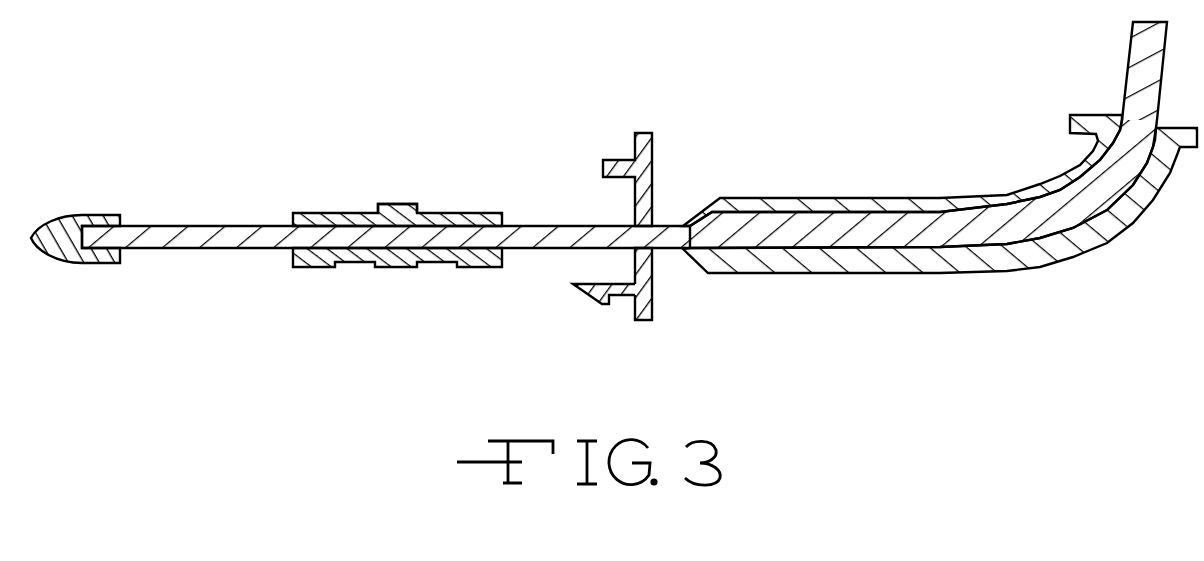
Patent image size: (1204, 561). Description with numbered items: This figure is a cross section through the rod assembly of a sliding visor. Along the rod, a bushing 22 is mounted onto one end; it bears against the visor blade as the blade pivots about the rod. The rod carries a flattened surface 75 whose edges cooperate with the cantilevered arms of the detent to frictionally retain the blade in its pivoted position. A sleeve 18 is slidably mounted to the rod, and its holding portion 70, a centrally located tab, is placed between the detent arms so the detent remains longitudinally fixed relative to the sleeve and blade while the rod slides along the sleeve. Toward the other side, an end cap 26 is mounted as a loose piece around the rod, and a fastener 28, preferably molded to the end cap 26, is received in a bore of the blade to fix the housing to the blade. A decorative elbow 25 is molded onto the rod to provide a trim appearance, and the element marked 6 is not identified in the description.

The bushing 22 is at (65, 213).
The flattened surface 75 is at (180, 224).
The holding portion 70 is at (382, 204).
The sleeve 18 is at (457, 213).
The end cap 26 is at (655, 170).
The fastener 28 is at (590, 287).
The decorative elbow 25 is at (1078, 174).
The connector stem 6 is at (1130, 63).